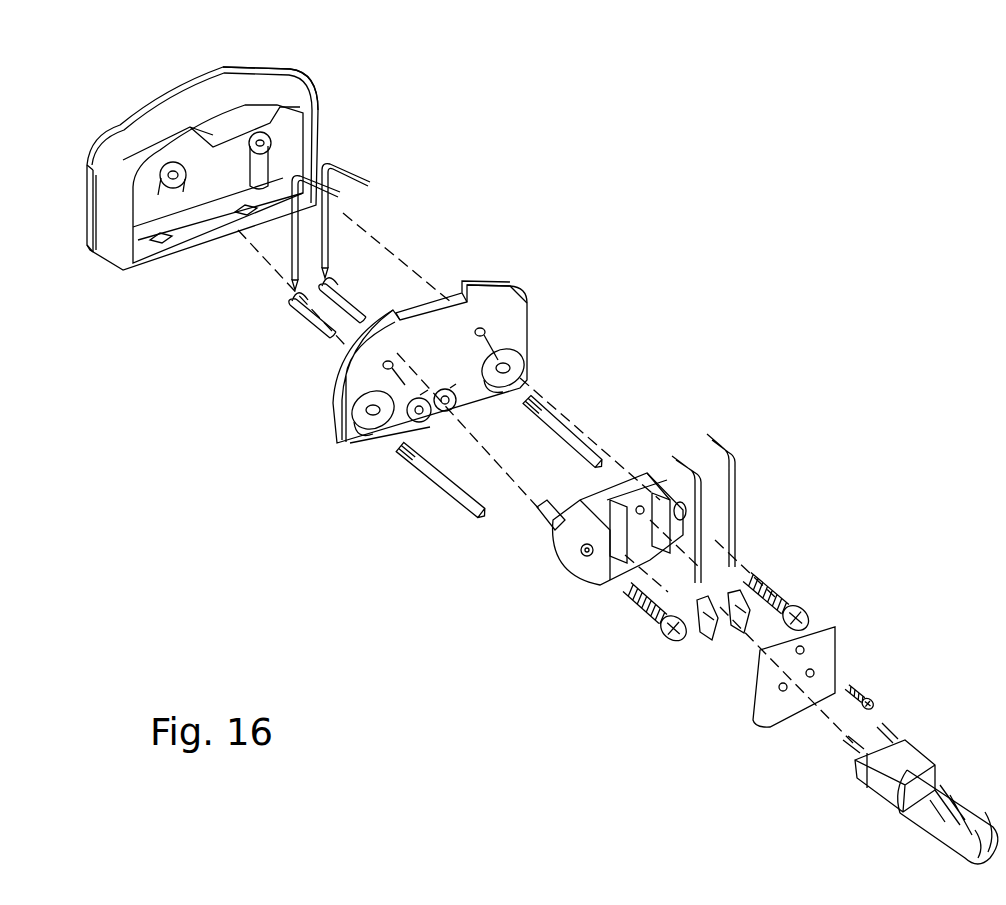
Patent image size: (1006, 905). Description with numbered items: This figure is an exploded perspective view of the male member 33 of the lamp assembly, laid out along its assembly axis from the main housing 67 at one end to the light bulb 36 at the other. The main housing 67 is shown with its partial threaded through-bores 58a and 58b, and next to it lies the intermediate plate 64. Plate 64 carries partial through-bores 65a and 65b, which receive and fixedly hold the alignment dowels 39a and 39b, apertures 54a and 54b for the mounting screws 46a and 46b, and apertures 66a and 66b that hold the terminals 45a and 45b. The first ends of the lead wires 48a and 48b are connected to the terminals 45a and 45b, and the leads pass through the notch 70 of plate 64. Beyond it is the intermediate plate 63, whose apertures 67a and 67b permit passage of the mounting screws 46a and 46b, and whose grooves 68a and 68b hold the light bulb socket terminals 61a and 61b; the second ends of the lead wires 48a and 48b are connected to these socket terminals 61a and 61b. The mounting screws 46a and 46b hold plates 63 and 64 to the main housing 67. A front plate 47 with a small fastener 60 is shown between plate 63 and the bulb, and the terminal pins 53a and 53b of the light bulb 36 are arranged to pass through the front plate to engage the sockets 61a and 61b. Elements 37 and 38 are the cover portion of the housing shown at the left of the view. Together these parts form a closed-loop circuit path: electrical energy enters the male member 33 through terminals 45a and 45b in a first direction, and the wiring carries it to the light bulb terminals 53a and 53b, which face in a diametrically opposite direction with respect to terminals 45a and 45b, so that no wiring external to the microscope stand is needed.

The male member 33 is at (790, 135).
The light bulb 36 is at (927, 817).
The housing 37 is at (232, 105).
The housing top wall 38 is at (236, 68).
The alignment dowel 39a is at (550, 417).
The alignment dowel 39b is at (430, 470).
The terminal 45a is at (362, 318).
The terminal 45b is at (318, 330).
The mounting screw 46a is at (775, 590).
The mounting screw 46b is at (637, 603).
The mounting plate 47 is at (823, 628).
The lead wire 48a is at (372, 187).
The lead wire 48b is at (293, 185).
The terminal pin 53a is at (880, 727).
The terminal pin 53b is at (843, 745).
The aperture 54a is at (486, 331).
The aperture 54b is at (380, 372).
The partial threaded through-bore 58a is at (268, 142).
The partial threaded through-bore 58b is at (163, 171).
The screw 60 is at (853, 690).
The light bulb socket terminal 61a is at (747, 582).
The light bulb socket terminal 61b is at (712, 642).
The intermediate plate 63 is at (625, 478).
The intermediate plate 64 is at (507, 292).
The partial through-bore 65a is at (522, 344).
The partial through-bore 65b is at (343, 445).
The aperture 66a is at (470, 398).
The aperture 66b is at (385, 420).
The main housing 67 is at (110, 232).
The aperture 67a is at (690, 514).
The aperture 67b is at (590, 553).
The groove 68a is at (648, 478).
The groove 68b is at (600, 500).
The notch 70 is at (502, 305).